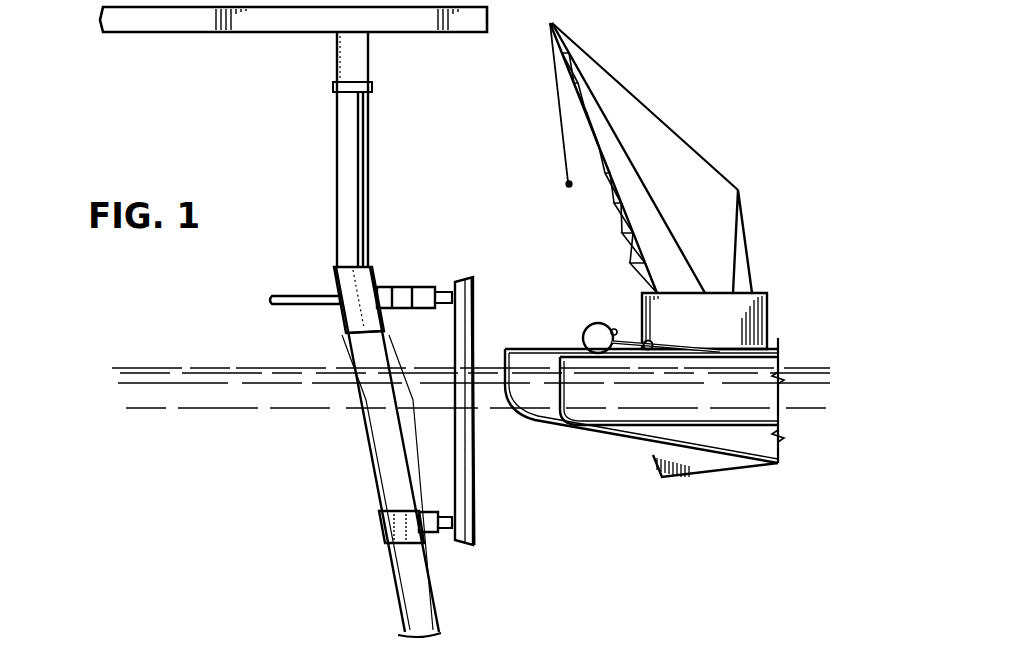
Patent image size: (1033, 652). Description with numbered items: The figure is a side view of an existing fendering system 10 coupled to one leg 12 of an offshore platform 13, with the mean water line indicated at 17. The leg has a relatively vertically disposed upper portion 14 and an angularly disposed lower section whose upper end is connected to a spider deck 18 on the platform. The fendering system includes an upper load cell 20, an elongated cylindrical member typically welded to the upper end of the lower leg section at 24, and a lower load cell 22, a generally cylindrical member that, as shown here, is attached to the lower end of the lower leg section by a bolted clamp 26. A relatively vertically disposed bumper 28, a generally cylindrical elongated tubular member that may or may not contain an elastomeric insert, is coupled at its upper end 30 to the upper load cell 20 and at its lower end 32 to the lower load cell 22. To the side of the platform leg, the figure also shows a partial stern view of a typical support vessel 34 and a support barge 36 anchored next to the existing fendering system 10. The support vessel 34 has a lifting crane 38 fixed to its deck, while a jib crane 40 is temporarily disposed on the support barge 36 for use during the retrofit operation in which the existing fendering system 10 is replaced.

The existing fendering system 10 is at (512, 366).
The leg 12 is at (373, 478).
The offshore platform 13 is at (204, 36).
The upper portion 14 is at (335, 64).
The mean water line 17 is at (181, 368).
The spider deck 18 is at (280, 296).
The upper load cell 20 is at (402, 289).
The lower load cell 22 is at (430, 532).
The weld 24 is at (381, 280).
The bolted clamp 26 is at (379, 532).
The bumper 28 is at (476, 448).
The upper end of bumper 30 is at (451, 285).
The lower end of bumper 32 is at (449, 529).
The support vessel 34 is at (539, 355).
The support barge 36 is at (690, 412).
The lifting crane 38 is at (768, 299).
The jib crane 40 is at (598, 323).